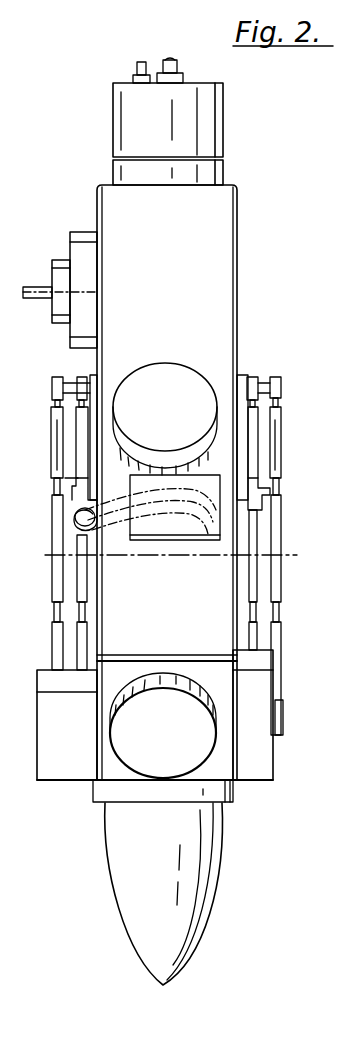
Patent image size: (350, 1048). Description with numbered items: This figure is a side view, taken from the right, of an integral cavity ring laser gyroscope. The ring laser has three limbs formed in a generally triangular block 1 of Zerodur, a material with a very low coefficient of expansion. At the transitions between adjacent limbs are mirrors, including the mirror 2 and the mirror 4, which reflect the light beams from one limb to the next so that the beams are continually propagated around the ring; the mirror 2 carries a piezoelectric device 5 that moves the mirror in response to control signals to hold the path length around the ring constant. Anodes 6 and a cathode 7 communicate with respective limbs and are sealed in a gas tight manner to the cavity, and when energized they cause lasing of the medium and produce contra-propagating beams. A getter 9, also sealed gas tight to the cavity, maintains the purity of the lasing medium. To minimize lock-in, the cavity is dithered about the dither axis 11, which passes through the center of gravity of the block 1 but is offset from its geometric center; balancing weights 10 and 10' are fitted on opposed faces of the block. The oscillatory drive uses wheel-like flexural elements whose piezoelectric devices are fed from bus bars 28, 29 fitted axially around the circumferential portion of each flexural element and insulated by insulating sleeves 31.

The triangular block 1 is at (228, 277).
The mirror 2 is at (223, 166).
The mirror 4 is at (165, 700).
The piezoelectric device 5 is at (223, 125).
The anode 6 is at (163, 370).
The cathode 7 is at (207, 902).
The getter 9 is at (80, 232).
The balancing weight 10 is at (67, 743).
The balancing weight 10' is at (259, 733).
The dither axis 11 is at (175, 558).
The bus bar 28 is at (262, 388).
The bus bar 29 is at (281, 400).
The insulating sleeve 31 is at (281, 448).